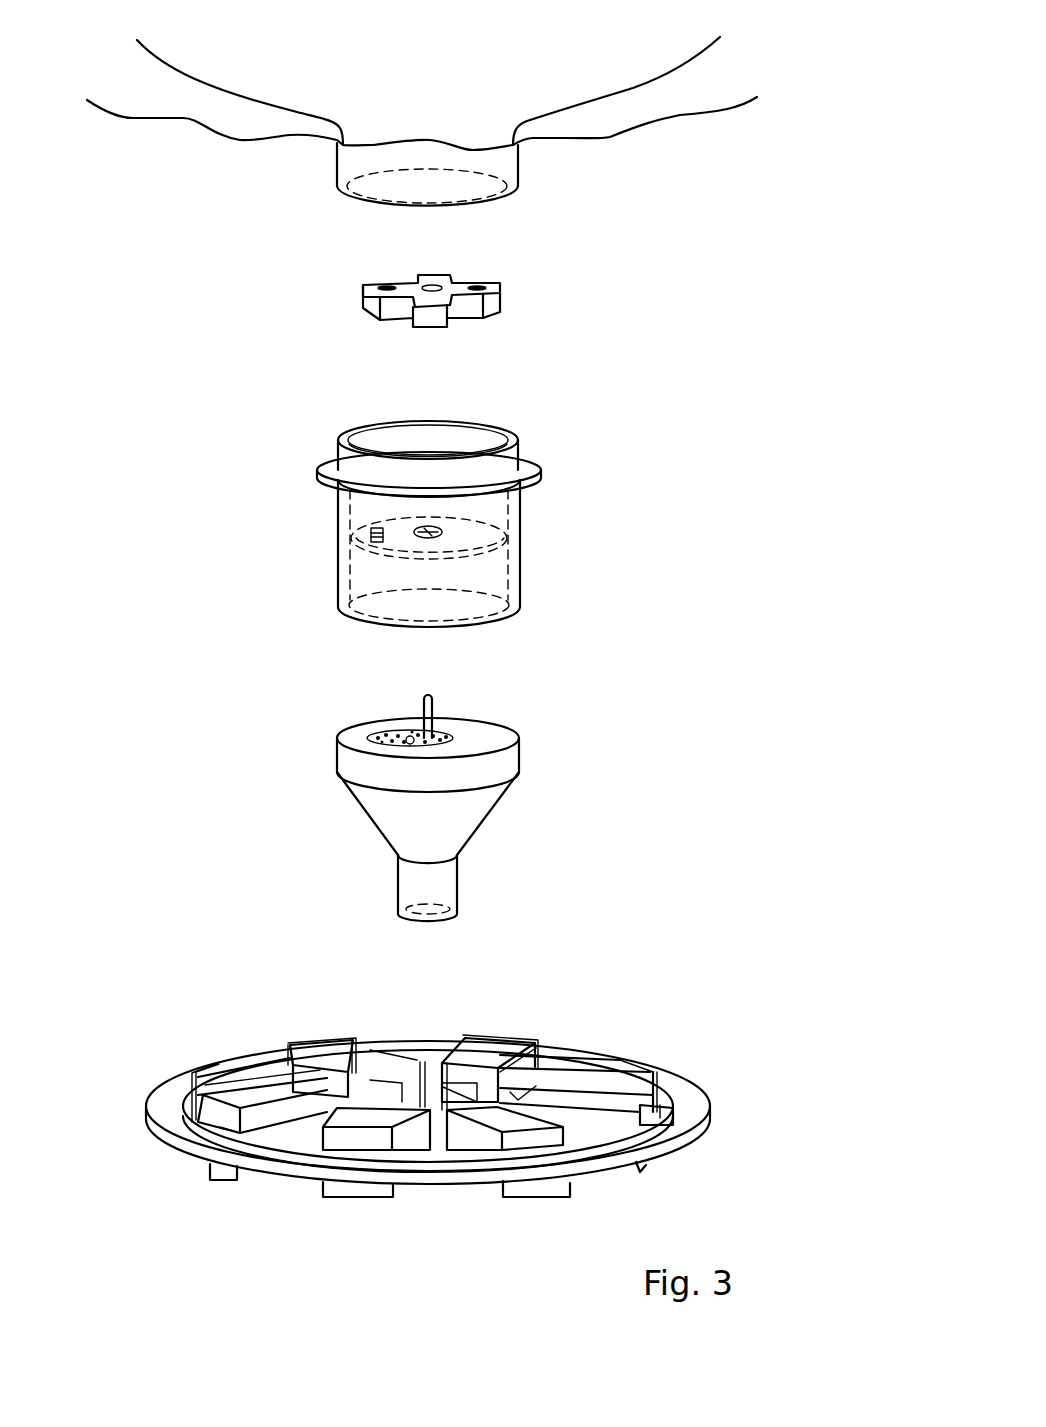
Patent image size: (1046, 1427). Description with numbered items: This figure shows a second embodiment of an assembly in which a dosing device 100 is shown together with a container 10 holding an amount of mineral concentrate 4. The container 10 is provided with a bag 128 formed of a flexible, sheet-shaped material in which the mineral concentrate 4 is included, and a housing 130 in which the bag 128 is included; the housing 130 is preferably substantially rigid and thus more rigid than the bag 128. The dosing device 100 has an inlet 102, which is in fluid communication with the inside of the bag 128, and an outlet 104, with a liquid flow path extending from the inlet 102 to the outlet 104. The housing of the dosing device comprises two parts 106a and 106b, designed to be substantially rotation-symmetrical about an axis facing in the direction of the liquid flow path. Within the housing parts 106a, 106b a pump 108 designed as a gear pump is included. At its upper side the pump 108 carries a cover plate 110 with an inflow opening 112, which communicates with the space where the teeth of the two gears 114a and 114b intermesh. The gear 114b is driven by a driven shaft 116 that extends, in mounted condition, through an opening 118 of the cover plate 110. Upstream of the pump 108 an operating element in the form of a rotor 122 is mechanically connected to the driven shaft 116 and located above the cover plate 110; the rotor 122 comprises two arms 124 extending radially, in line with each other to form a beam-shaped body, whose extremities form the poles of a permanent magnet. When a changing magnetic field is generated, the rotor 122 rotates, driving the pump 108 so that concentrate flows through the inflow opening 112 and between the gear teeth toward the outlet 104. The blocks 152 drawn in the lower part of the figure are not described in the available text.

The mineral concentrate 4 is at (418, 104).
The container 10 is at (277, 122).
The bag 128 is at (250, 97).
The housing 130 is at (619, 137).
The rotor 122 is at (481, 304).
The arms 124 is at (517, 280).
The dosing device 100 is at (428, 502).
The inlet 102 is at (467, 442).
The housing part 106a is at (337, 545).
The cover plate 110 is at (478, 535).
The inflow opening 112 is at (370, 530).
The opening 118 is at (437, 527).
The outlet 104 is at (397, 822).
The housing part 106b is at (337, 763).
The pump 108 is at (452, 737).
The gear 114a is at (365, 738).
The gear 114b is at (405, 732).
The driven shaft 116 is at (434, 708).
The sample holder blocks 152 is at (620, 1068).